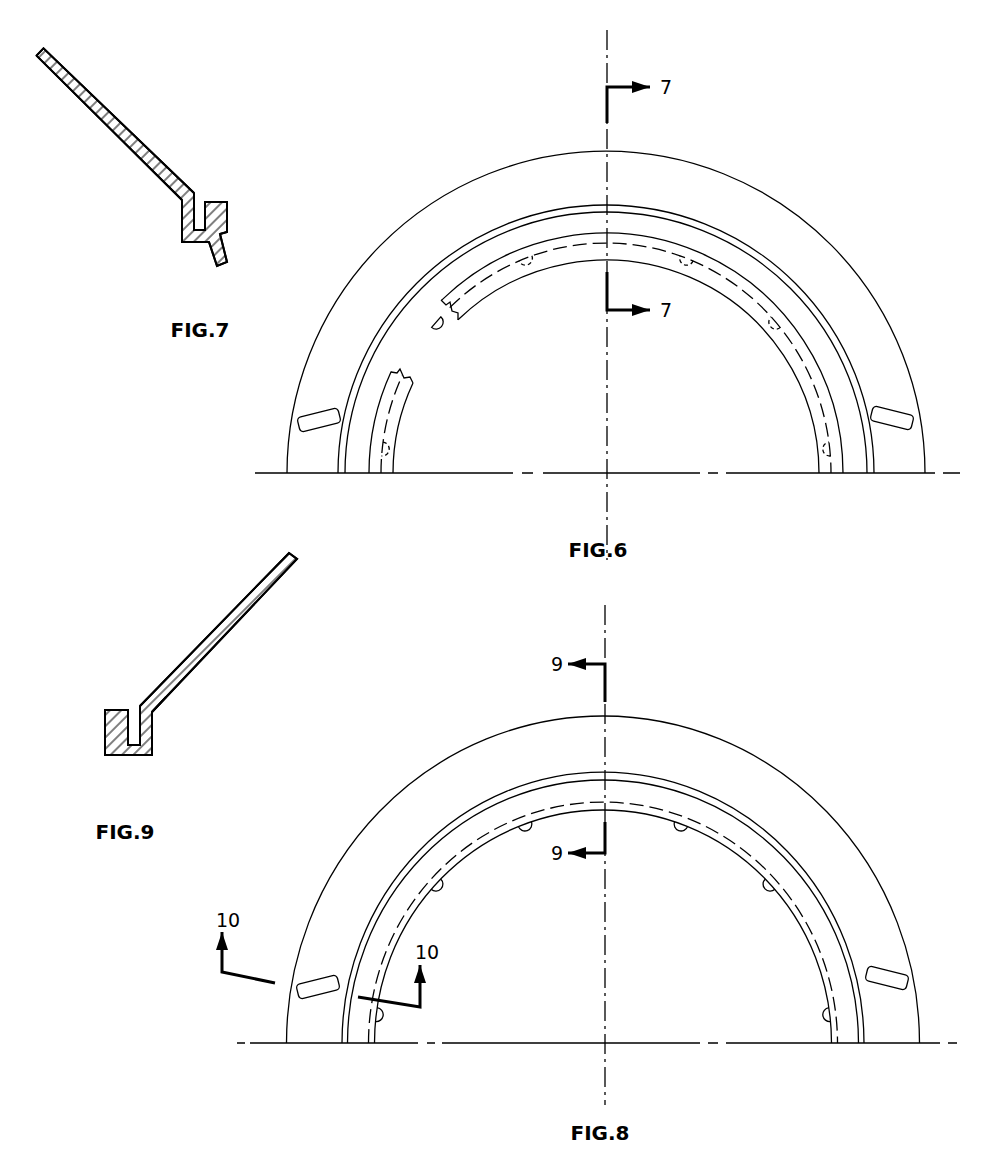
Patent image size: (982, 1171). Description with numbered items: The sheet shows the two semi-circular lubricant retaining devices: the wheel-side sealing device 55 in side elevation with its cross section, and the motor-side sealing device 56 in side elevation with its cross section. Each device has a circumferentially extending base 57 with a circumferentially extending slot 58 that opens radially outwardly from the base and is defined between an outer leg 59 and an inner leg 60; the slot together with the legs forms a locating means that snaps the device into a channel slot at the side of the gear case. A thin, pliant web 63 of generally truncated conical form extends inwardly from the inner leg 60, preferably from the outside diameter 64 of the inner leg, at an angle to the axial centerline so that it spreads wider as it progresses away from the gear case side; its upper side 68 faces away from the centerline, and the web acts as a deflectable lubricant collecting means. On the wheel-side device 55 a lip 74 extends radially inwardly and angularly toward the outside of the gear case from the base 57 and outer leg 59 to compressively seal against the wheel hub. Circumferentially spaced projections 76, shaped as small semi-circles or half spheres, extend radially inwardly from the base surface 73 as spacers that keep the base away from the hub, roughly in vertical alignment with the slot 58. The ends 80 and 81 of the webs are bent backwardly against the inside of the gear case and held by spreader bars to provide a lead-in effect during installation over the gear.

In FIG. 6, the wheel-side sealing device 55 is at (758, 152).
In FIG. 7, the wheel-side sealing device 55 is at (145, 90).
In FIG. 8, the motor-side sealing device 56 is at (773, 738).
In FIG. 9, the motor-side sealing device 56 is at (183, 577).
In FIG. 7, the base 57 is at (200, 241).
In FIG. 9, the base 57 is at (128, 754).
In FIG. 7, the slot 58 is at (198, 197).
In FIG. 9, the slot 58 is at (132, 711).
In FIG. 7, the outer leg 59 is at (225, 208).
In FIG. 9, the outer leg 59 is at (108, 733).
In FIG. 9, the inner leg 60 is at (153, 728).
In FIG. 6, the web 63 is at (832, 243).
In FIG. 8, the web 63 is at (843, 815).
In FIG. 7, the web 63 is at (85, 83).
In FIG. 9, the web 63 is at (267, 582).
In FIG. 9, the outside diameter of the inner leg 64 is at (156, 709).
In FIG. 6, the upper side of the web 68 is at (437, 232).
In FIG. 8, the upper side of the web 68 is at (455, 783).
In FIG. 7, the base surface 73 is at (186, 243).
In FIG. 9, the base surface 73 is at (137, 758).
In FIG. 7, the lip 74 is at (223, 250).
In FIG. 6, the projections 76 is at (442, 331).
In FIG. 8, the projections 76 is at (442, 891).
In FIG. 6, the web end 80 is at (323, 452).
In FIG. 8, the web end 81 is at (318, 1023).